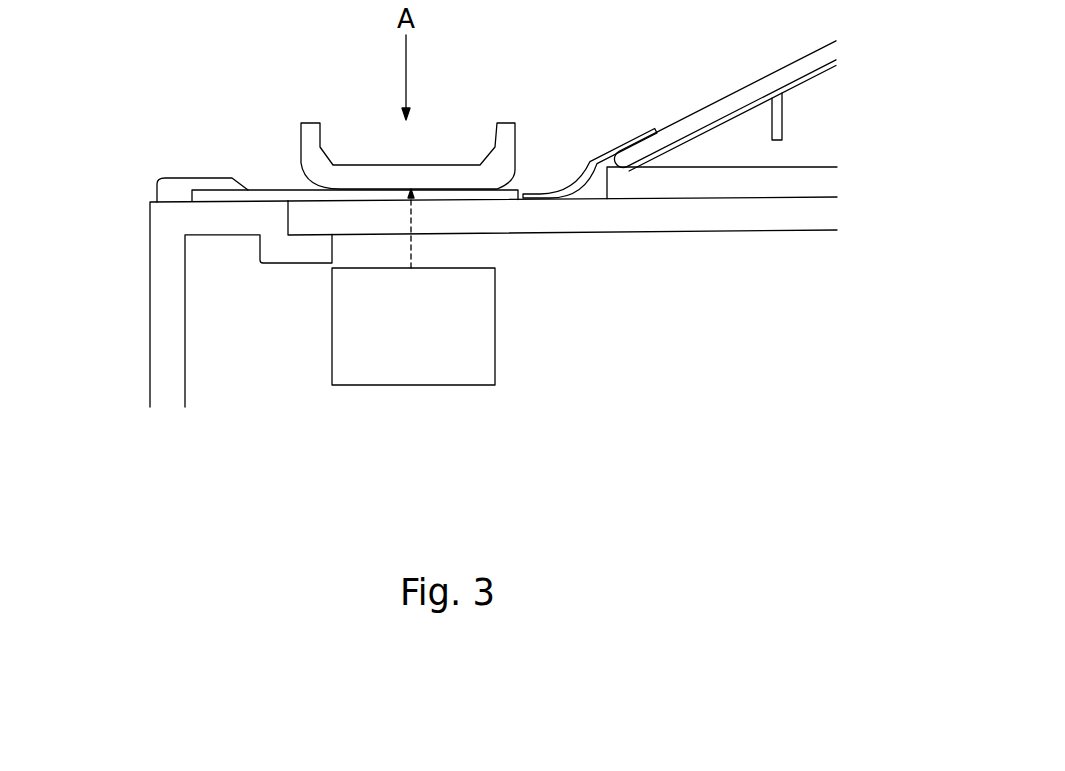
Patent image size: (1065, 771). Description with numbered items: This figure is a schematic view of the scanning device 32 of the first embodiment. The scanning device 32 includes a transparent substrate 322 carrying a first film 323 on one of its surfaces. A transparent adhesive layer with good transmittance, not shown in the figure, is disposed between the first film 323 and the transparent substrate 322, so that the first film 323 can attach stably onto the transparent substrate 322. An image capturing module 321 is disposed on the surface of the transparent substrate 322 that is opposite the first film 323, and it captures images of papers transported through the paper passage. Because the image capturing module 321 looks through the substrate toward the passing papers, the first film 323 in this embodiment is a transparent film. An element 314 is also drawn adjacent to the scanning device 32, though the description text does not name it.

The scanning device 32 is at (134, 310).
The image capturing module 321 is at (413, 287).
The transparent substrate 322 is at (680, 218).
The first film 323 is at (285, 190).
The spring terminal 314 is at (576, 168).